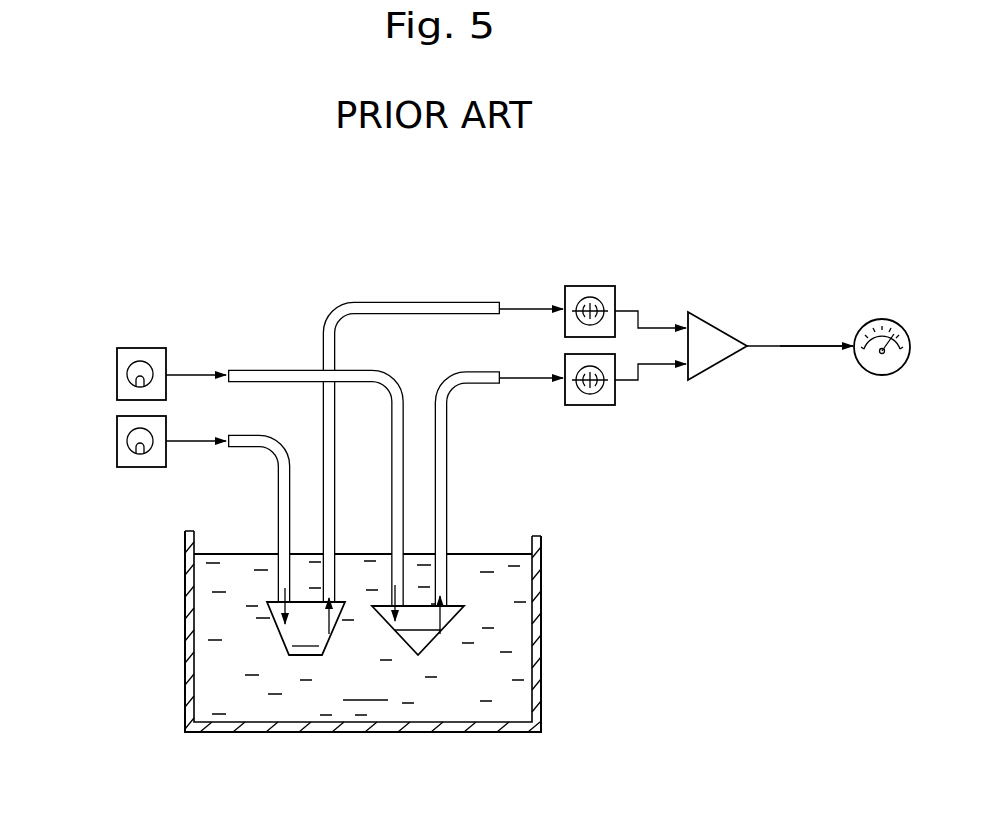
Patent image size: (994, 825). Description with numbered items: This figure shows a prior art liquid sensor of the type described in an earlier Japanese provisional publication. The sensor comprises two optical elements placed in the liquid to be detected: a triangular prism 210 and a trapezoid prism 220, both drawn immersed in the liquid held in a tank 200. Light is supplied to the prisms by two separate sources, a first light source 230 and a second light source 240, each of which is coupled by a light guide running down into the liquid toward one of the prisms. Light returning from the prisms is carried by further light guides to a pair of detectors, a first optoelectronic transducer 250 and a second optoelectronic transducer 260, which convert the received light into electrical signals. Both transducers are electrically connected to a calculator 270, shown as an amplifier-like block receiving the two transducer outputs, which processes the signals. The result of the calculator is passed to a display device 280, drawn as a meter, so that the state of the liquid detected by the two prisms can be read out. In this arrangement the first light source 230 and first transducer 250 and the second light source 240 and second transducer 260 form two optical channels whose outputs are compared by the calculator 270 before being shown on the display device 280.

The liquid tank 200 is at (363, 631).
The triangular prism 210 is at (432, 640).
The trapezoid prism 220 is at (297, 656).
The first light source 230 is at (117, 443).
The second light source 240 is at (117, 373).
The first optoelectronic transducer 250 is at (593, 284).
The second optoelectronic transducer 260 is at (588, 406).
The calculator 270 is at (710, 318).
The display device 280 is at (877, 318).